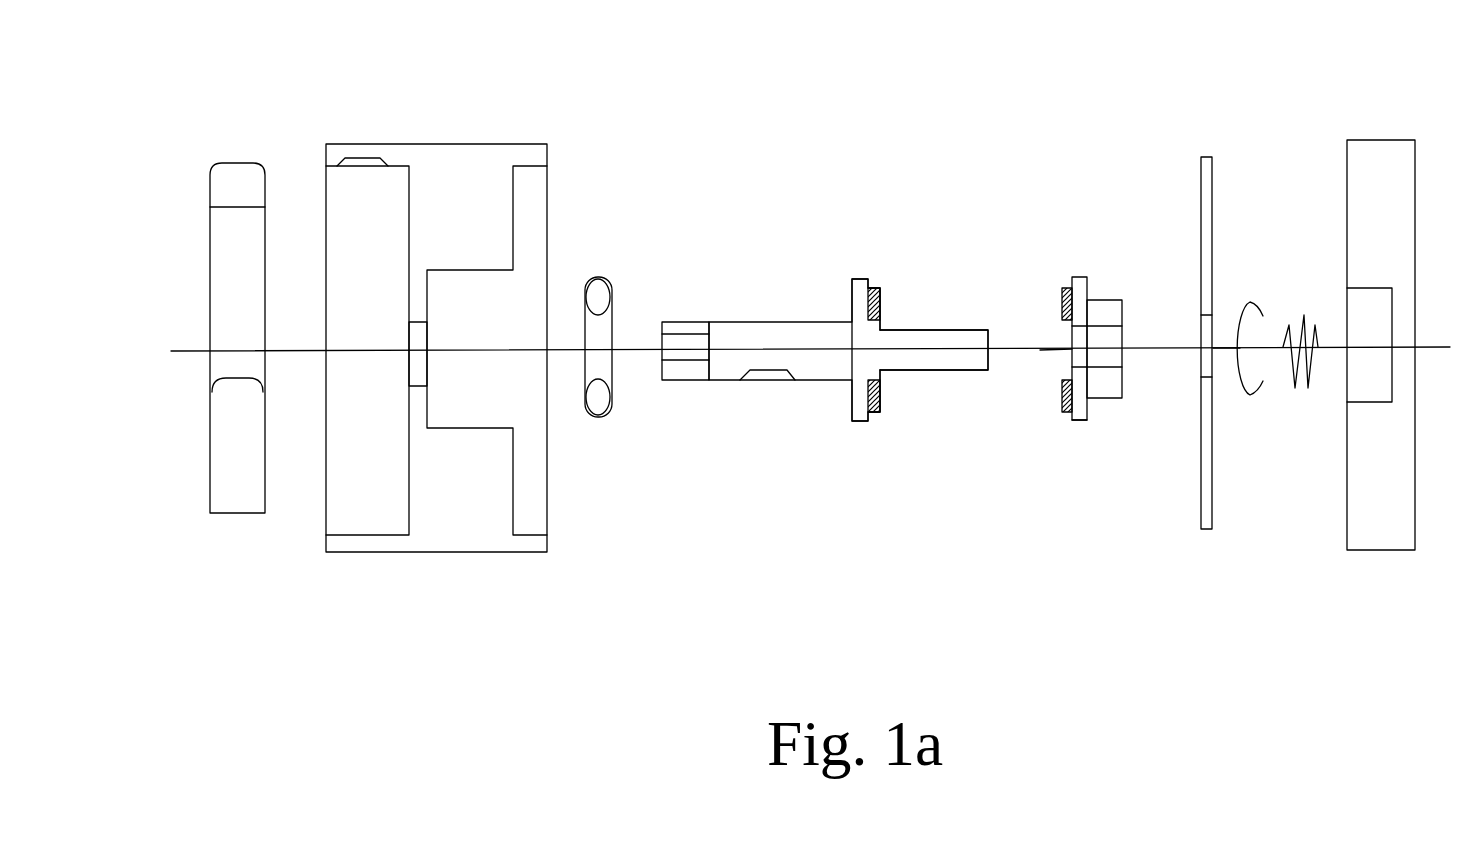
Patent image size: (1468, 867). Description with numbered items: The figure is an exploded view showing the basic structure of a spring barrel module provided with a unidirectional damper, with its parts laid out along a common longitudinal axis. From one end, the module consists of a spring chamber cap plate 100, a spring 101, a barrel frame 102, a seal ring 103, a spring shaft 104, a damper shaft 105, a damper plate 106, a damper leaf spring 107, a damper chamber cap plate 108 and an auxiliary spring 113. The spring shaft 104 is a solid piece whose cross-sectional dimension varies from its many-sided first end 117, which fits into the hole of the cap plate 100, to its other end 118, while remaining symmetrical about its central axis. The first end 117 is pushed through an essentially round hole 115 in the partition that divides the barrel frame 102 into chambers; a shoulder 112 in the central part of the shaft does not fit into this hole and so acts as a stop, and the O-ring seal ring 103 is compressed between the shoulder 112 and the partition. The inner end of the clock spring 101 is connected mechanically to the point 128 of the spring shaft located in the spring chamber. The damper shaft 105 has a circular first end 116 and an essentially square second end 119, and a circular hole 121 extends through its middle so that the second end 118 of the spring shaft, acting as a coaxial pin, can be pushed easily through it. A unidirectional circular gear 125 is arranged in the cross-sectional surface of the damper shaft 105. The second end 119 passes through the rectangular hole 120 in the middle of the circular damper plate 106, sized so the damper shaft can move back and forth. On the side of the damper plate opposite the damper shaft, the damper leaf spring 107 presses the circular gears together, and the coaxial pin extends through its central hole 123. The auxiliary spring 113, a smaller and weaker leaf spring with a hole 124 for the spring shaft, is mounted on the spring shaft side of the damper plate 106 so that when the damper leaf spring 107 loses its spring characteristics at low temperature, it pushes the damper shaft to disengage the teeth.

The spring chamber cap plate 100 is at (805, 201).
The spring 101 is at (248, 160).
The barrel frame 102 is at (478, 140).
The seal ring 103 is at (599, 273).
The spring shaft 104 is at (770, 318).
The damper shaft 105 is at (1076, 275).
The damper plate 106 is at (1203, 150).
The damper leaf spring 107 is at (1249, 300).
The damper chamber cap plate 108 is at (1373, 138).
The shoulder 112 is at (850, 405).
The auxiliary spring 113 is at (1303, 388).
The hole 115 is at (418, 328).
The first end of damper shaft 116 is at (1080, 421).
The first end of spring shaft 117 is at (677, 340).
The second end of spring shaft 118 is at (947, 337).
The second end of damper shaft 119 is at (1123, 377).
The hole in damper plate 120 is at (1200, 338).
The hole in damper shaft 121 is at (1070, 350).
The hole in damper leaf spring 123 is at (1235, 347).
The hole in auxiliary leaf spring 124 is at (360, 158).
The unidirectional circular gear 125 is at (1062, 285).
The connection point of clock spring 128 is at (767, 373).